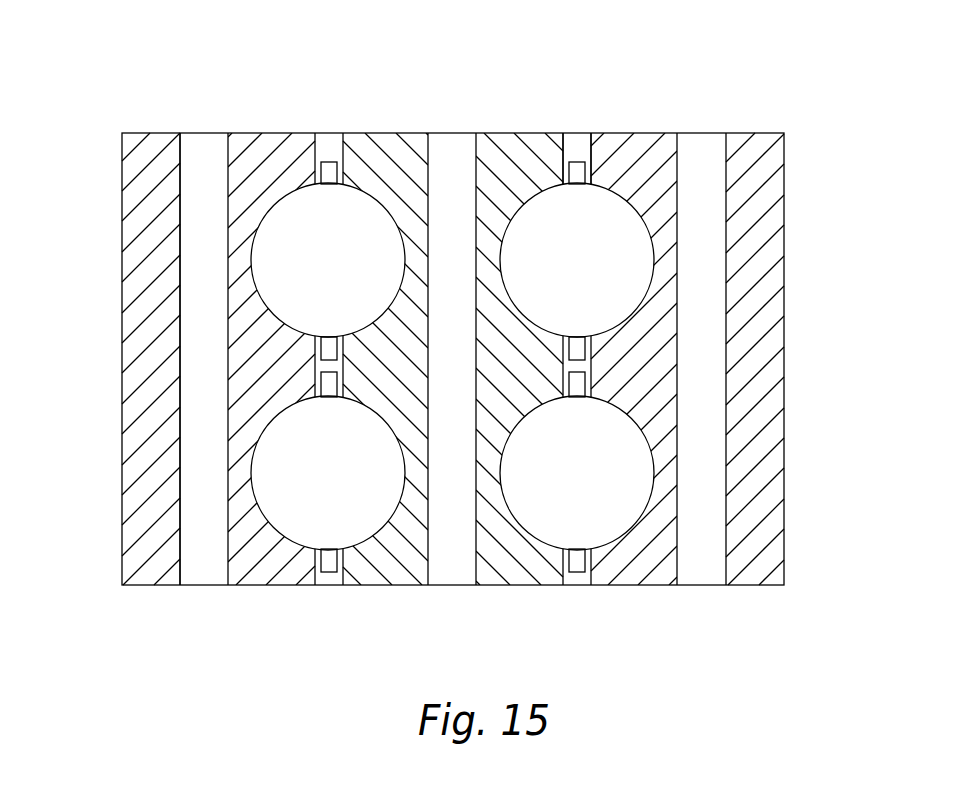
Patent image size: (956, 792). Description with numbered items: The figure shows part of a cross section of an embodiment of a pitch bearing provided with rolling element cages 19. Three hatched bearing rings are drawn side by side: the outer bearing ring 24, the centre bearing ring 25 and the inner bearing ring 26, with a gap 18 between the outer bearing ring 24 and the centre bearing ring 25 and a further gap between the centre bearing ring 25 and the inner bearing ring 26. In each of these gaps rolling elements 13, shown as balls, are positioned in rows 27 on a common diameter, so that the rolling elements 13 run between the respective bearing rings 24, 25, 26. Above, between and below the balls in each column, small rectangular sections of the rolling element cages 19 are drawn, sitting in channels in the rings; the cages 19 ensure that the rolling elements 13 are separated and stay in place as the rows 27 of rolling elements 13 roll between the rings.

The rolling element 13 is at (324, 247).
The gap 18 is at (203, 435).
The rolling element cage 19 is at (576, 170).
The outer bearing ring 24 is at (142, 202).
The centre bearing ring 25 is at (410, 187).
The inner bearing ring 26 is at (757, 163).
The row of rolling elements 27 is at (655, 261).